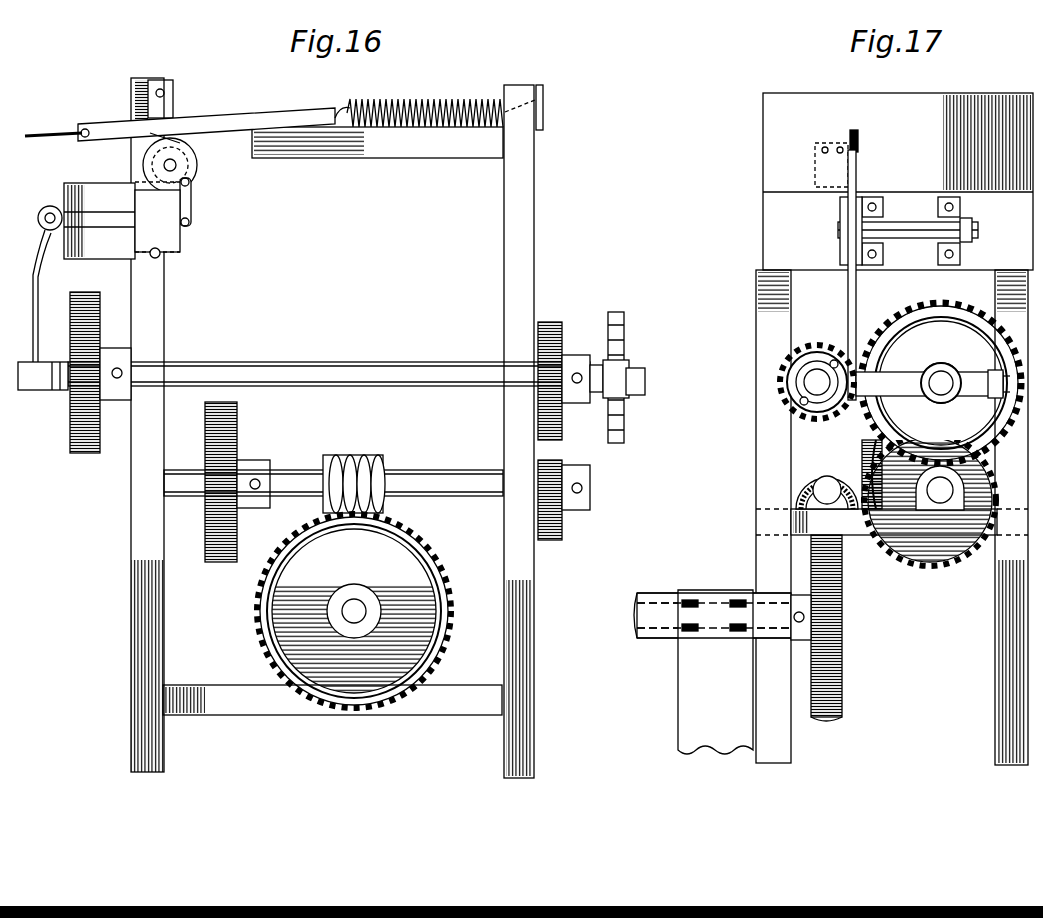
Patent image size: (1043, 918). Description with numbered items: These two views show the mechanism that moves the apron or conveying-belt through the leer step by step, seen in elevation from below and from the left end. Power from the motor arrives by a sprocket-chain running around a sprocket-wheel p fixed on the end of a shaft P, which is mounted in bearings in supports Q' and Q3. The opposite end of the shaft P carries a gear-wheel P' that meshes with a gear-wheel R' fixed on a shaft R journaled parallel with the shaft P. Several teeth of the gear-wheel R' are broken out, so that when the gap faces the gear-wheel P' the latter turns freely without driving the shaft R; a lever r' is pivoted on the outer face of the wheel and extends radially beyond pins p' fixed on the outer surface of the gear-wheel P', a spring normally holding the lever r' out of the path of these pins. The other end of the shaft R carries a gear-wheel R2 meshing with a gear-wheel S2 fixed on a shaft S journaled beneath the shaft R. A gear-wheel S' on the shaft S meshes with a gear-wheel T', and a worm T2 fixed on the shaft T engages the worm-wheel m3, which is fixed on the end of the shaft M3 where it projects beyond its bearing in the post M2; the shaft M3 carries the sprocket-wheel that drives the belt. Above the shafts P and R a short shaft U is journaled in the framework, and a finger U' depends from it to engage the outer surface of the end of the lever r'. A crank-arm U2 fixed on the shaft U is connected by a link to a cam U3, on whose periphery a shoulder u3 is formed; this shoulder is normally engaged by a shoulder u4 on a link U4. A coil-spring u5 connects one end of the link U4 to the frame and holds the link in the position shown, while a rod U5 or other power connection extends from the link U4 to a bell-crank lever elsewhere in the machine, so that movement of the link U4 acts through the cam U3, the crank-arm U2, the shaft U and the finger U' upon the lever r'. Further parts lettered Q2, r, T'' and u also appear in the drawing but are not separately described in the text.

In FIG. 16, the support Q' is at (291, 425).
In FIG. 17, the support Q' is at (991, 517).
In FIG. 17, the frame post Q2 is at (765, 556).
In FIG. 16, the support Q3 is at (515, 595).
In FIG. 16, the shaft R is at (329, 356).
In FIG. 17, the shaft R is at (941, 383).
In FIG. 16, the gear-wheel R' is at (74, 383).
In FIG. 17, the gear-wheel R' is at (933, 398).
In FIG. 16, the gear-wheel R2 is at (550, 322).
In FIG. 17, the rod r is at (1008, 403).
In FIG. 16, the lever r' is at (34, 326).
In FIG. 16, the shaft S is at (461, 451).
In FIG. 17, the shaft S is at (930, 523).
In FIG. 16, the gear-wheel S' is at (237, 482).
In FIG. 17, the gear-wheel S' is at (918, 526).
In FIG. 16, the gear-wheel S2 is at (560, 530).
In FIG. 16, the shaft T is at (333, 461).
In FIG. 17, the gear-wheel T' is at (770, 490).
In FIG. 17, the bearing cap T'' is at (814, 471).
In FIG. 16, the worm T2 is at (325, 462).
In FIG. 16, the shaft P is at (590, 342).
In FIG. 17, the shaft P is at (757, 409).
In FIG. 17, the gear-wheel P' is at (786, 382).
In FIG. 16, the sprocket-wheel p is at (630, 371).
In FIG. 17, the pins p' is at (771, 366).
In FIG. 17, the standard M2 is at (714, 672).
In FIG. 16, the shaft M3 is at (354, 606).
In FIG. 17, the shaft M3 is at (640, 618).
In FIG. 16, the worm-wheel m3 is at (254, 605).
In FIG. 17, the worm-wheel m3 is at (845, 668).
In FIG. 16, the short shaft U is at (76, 215).
In FIG. 17, the short shaft U is at (908, 218).
In FIG. 17, the finger U' is at (869, 275).
In FIG. 16, the crank-arm U2 is at (165, 228).
In FIG. 16, the cam U3 is at (198, 166).
In FIG. 16, the link U4 is at (190, 125).
In FIG. 17, the link U4 is at (848, 135).
In FIG. 16, the rod U5 is at (45, 130).
In FIG. 16, the pivot u is at (40, 226).
In FIG. 16, the shoulder u3 is at (160, 142).
In FIG. 16, the shoulder u4 is at (175, 140).
In FIG. 16, the coil-spring u5 is at (440, 100).